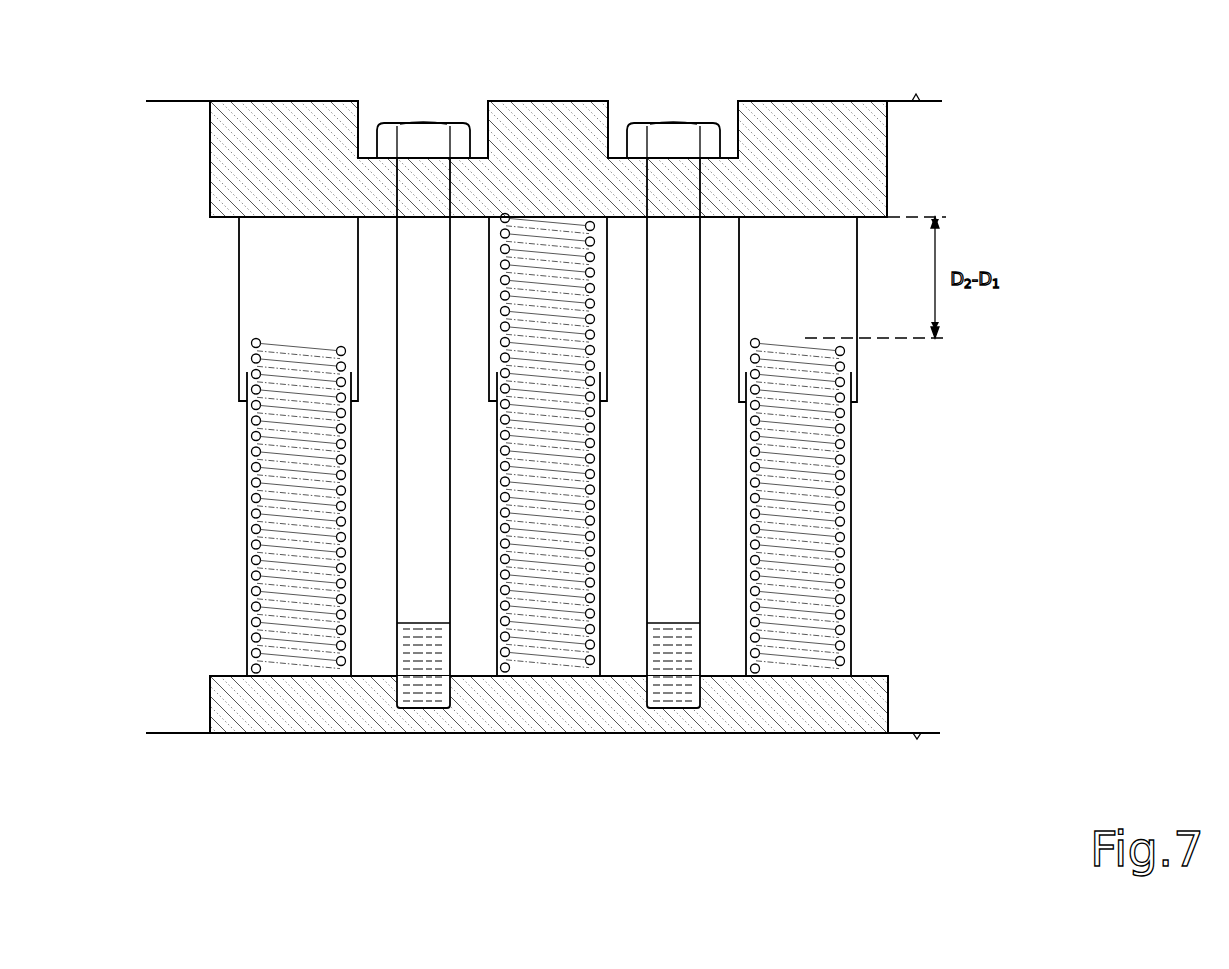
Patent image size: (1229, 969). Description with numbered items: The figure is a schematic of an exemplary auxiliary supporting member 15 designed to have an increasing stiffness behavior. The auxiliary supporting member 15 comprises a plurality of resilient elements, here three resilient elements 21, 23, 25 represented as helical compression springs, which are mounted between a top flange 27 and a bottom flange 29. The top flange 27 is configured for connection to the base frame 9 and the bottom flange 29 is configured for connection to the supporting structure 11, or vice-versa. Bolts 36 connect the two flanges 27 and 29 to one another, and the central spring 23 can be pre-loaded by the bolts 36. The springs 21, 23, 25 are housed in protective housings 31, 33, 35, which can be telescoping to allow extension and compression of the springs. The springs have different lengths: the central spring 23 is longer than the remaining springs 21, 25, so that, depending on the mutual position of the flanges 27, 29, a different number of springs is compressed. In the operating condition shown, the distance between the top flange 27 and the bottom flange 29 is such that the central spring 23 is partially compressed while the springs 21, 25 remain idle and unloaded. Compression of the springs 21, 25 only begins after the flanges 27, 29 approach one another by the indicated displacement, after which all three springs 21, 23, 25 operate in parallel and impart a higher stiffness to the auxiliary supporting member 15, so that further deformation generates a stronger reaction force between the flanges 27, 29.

The base frame 9 is at (918, 101).
The supporting structure 11 is at (918, 733).
The auxiliary supporting member 15 is at (263, 82).
The resilient element 21 is at (292, 525).
The resilient element 23 is at (552, 525).
The resilient element 25 is at (805, 525).
The top flange 27 is at (222, 218).
The bottom flange 29 is at (492, 712).
The protective housing 31 is at (240, 296).
The protective housing 33 is at (492, 294).
The protective housing 35 is at (740, 298).
The bolt 36 is at (414, 437).